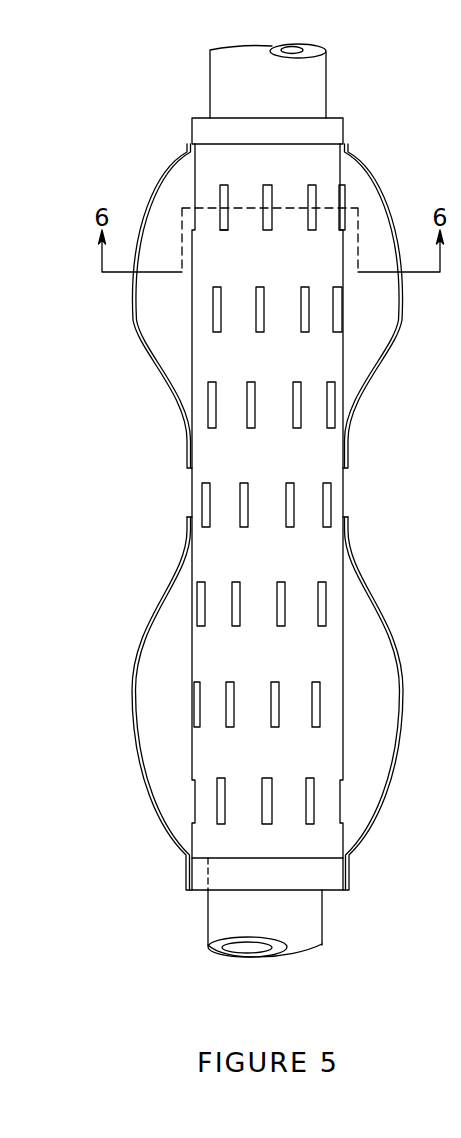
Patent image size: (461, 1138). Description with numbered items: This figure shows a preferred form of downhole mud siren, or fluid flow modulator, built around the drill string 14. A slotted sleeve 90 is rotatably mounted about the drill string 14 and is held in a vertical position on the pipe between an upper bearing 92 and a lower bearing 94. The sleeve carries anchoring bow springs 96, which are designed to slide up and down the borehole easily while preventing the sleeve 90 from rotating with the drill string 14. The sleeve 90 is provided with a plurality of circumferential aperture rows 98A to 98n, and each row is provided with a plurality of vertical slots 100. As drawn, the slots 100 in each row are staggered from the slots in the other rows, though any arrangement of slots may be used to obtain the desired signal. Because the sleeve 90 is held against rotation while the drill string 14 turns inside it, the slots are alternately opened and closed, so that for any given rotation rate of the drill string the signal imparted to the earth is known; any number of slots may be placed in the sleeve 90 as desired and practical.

The drill string 14 is at (327, 62).
The slotted sleeve 90 is at (218, 166).
The upper bearing 92 is at (343, 127).
The lower bearing 94 is at (332, 877).
The anchoring bow springs 96 is at (385, 353).
The circumferential aperture row 98A is at (221, 192).
The circumferential aperture row 98n is at (213, 802).
The vertical slots 100 is at (222, 232).